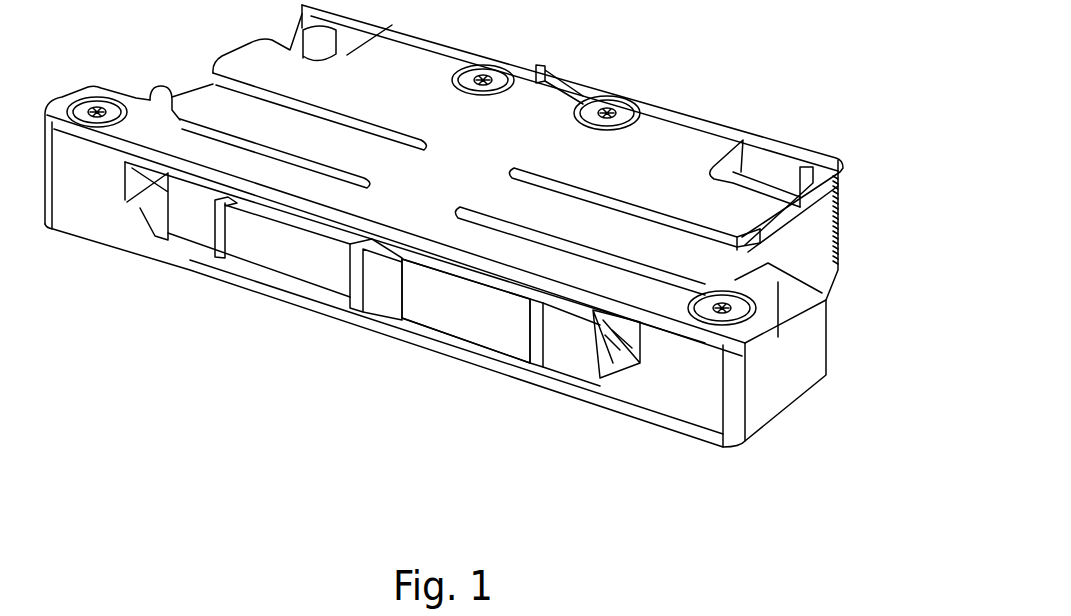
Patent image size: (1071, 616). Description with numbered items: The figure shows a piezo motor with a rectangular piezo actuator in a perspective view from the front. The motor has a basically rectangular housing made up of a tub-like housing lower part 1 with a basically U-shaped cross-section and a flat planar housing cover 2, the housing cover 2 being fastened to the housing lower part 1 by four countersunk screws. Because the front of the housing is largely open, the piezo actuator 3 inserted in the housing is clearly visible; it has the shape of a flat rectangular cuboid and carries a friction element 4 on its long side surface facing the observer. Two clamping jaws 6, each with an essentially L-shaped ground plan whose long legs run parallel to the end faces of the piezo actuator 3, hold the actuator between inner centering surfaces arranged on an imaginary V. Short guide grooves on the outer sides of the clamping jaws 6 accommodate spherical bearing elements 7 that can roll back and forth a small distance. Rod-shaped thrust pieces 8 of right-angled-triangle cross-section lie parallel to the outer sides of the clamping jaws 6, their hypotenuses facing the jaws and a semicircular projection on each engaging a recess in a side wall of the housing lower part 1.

The housing lower part 1 is at (808, 252).
The housing cover 2 is at (658, 147).
The piezo actuator 3 is at (455, 302).
The friction element 4 is at (382, 288).
The clamping jaws 6 is at (193, 223).
The bearing elements 7 is at (632, 333).
The thrust pieces 8 is at (613, 340).